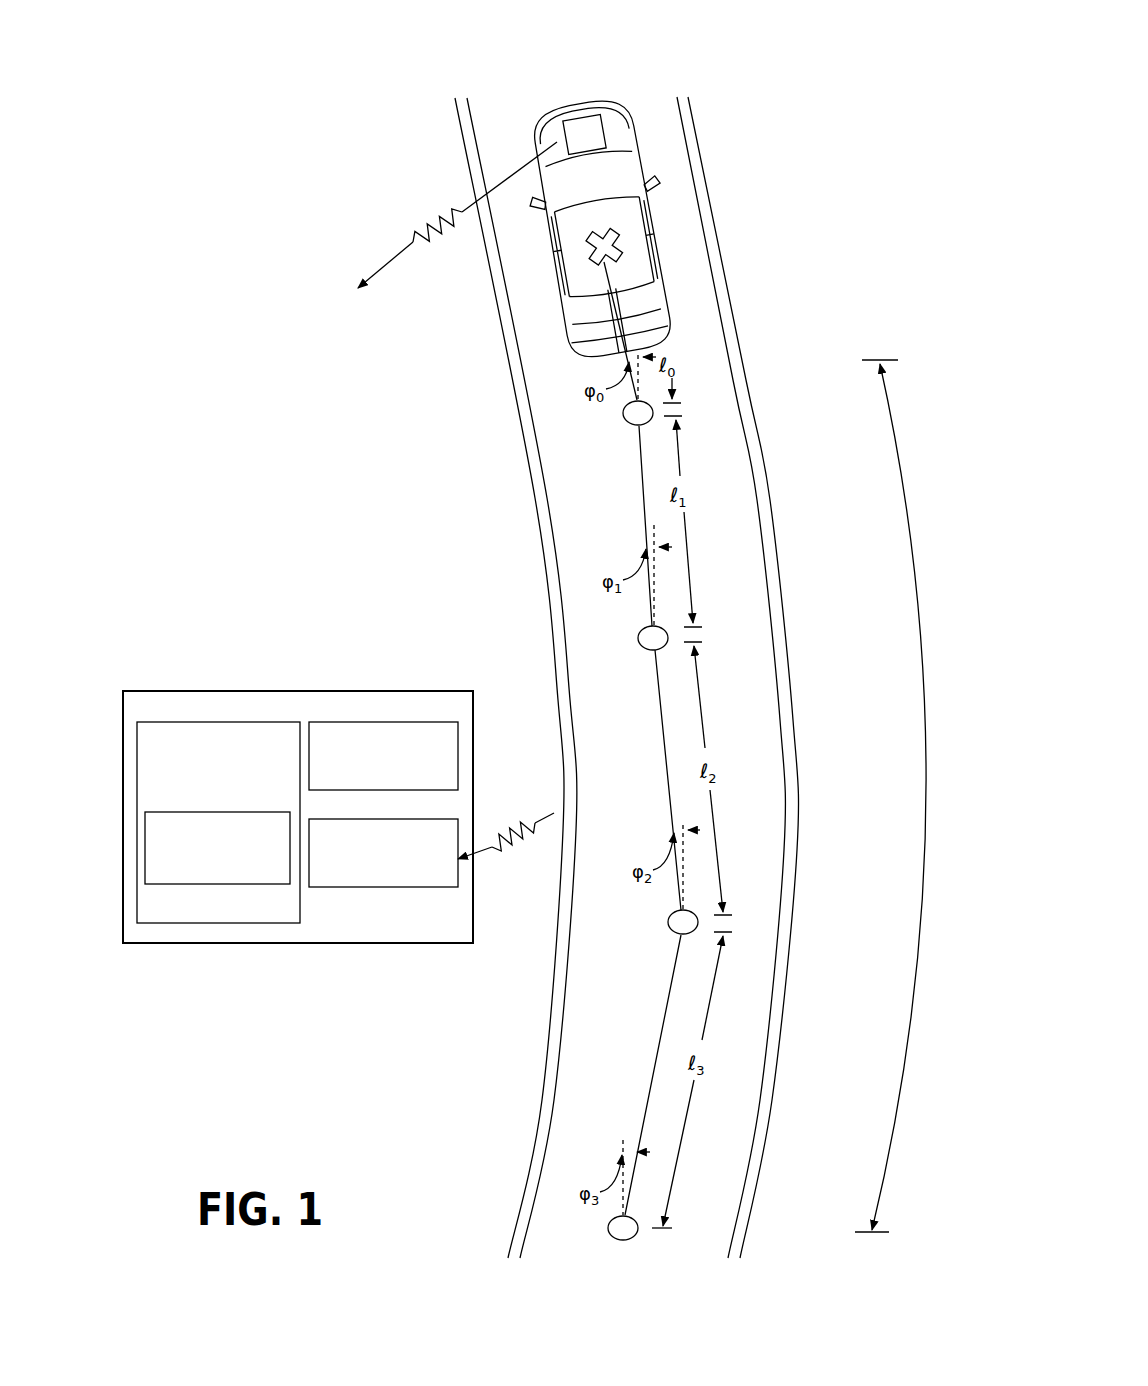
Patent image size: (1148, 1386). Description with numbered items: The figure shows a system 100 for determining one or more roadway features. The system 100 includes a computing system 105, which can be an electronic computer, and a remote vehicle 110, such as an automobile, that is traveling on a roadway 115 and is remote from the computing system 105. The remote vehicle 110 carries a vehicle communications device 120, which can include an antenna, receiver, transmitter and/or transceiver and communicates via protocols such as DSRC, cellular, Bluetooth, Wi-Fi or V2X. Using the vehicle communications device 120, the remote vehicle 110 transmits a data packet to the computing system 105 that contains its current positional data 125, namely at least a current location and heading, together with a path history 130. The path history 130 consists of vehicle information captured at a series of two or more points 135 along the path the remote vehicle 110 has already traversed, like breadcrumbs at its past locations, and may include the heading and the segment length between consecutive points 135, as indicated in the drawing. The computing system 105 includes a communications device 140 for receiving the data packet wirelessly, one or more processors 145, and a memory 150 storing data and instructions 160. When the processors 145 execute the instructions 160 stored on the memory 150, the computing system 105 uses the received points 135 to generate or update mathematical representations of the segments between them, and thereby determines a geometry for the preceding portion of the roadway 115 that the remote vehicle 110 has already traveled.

The system 100 is at (850, 42).
The computing system 105 is at (264, 691).
The remote vehicle 110 is at (637, 123).
The roadway 115 is at (533, 427).
The vehicle communications device 120 is at (577, 122).
The current positional data 125 is at (614, 235).
The path history 130 is at (898, 796).
The points 135 is at (623, 413).
The communications device 140 is at (372, 887).
The processor(s) 145 is at (387, 722).
The memory 150 is at (137, 766).
The instructions 160 is at (145, 847).